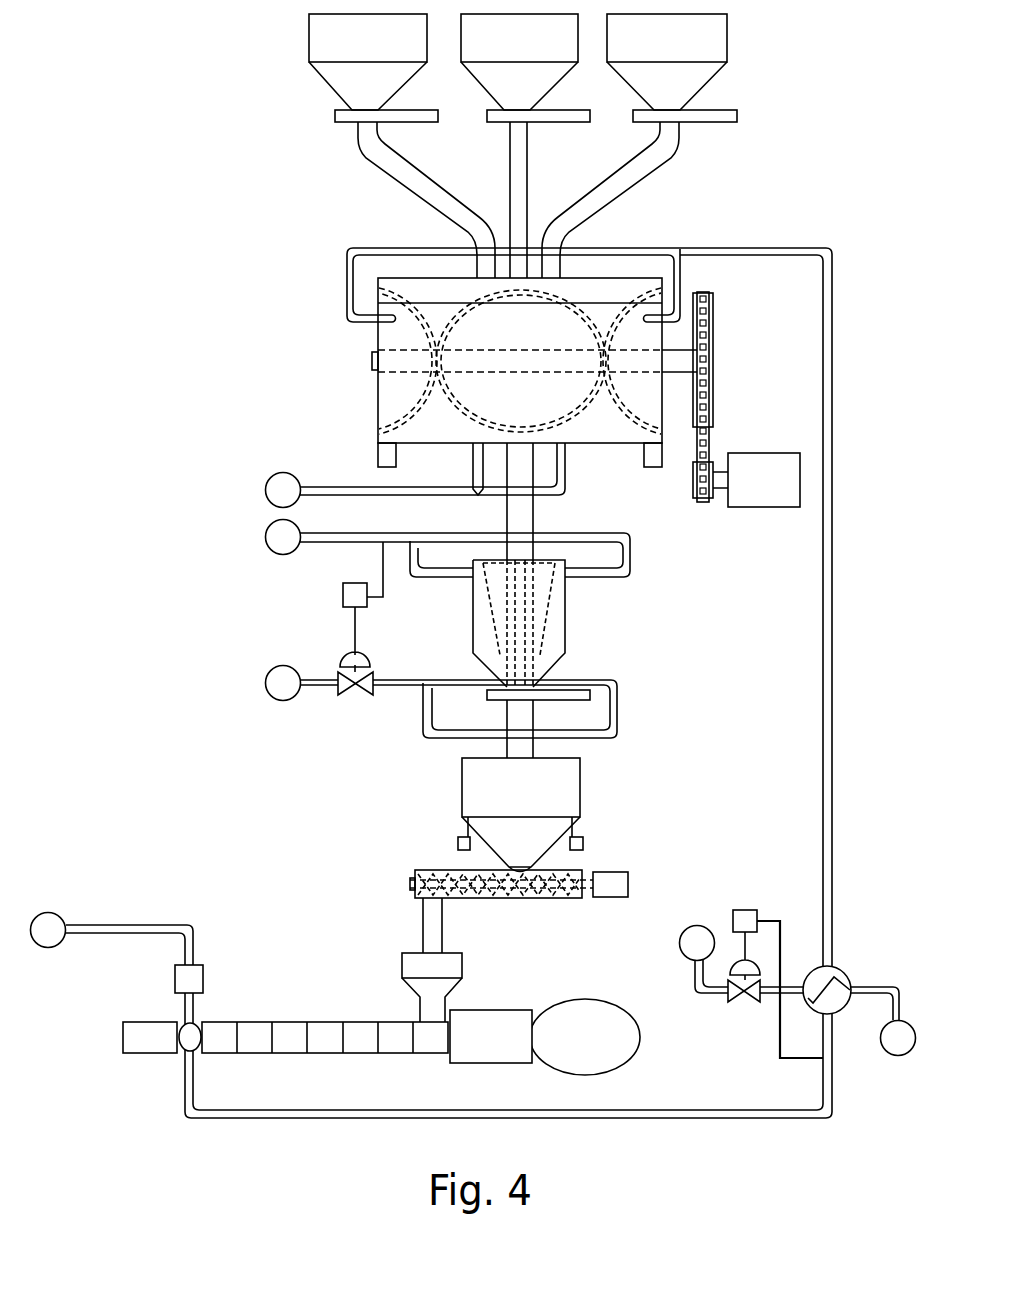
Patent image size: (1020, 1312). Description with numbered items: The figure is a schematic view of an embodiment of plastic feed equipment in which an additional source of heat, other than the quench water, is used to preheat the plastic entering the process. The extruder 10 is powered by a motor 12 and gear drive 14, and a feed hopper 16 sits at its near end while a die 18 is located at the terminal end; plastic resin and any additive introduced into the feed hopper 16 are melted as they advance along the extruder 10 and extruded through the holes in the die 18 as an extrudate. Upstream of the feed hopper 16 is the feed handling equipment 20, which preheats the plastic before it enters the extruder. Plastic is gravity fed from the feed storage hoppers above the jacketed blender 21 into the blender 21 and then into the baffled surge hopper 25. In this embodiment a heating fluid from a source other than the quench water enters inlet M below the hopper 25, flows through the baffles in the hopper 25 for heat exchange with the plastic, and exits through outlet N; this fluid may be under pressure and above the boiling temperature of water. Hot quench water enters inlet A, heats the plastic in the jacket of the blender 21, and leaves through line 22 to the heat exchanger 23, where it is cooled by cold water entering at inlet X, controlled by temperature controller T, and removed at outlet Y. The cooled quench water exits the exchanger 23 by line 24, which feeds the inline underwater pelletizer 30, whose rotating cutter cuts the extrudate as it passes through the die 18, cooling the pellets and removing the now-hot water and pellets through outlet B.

The extruder 10 is at (308, 992).
The motor 12 is at (588, 1023).
The gear drive 14 is at (492, 1028).
The feed hopper 16 is at (447, 970).
The die 18 is at (200, 1040).
The feed handling equipment 20 is at (170, 654).
The jacketed blender 21 is at (393, 395).
The line 22 is at (832, 606).
The heat exchanger 23 is at (833, 973).
The line 24 is at (705, 1120).
The baffled surge hopper 25 is at (555, 627).
The underwater pelletizer 30 is at (157, 1090).